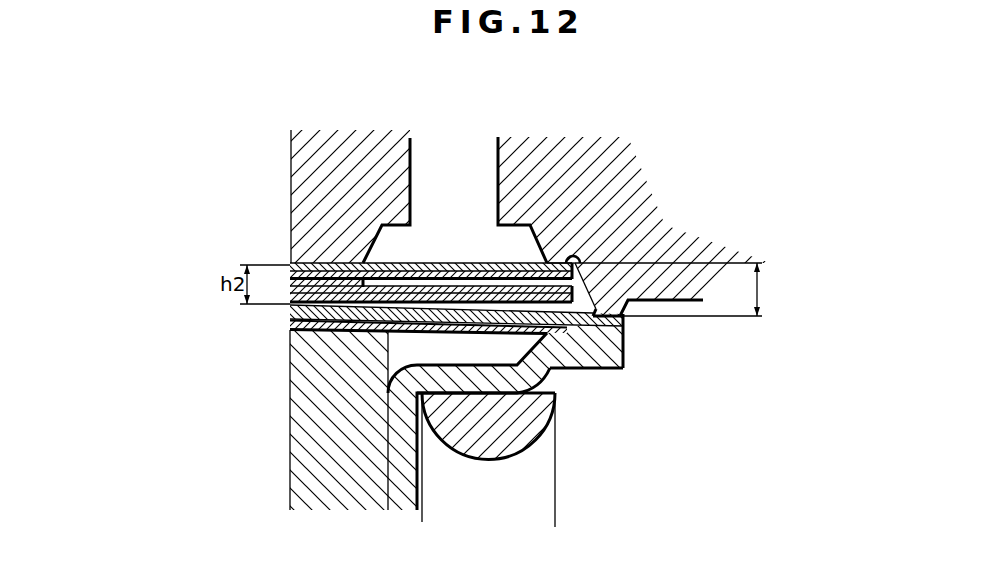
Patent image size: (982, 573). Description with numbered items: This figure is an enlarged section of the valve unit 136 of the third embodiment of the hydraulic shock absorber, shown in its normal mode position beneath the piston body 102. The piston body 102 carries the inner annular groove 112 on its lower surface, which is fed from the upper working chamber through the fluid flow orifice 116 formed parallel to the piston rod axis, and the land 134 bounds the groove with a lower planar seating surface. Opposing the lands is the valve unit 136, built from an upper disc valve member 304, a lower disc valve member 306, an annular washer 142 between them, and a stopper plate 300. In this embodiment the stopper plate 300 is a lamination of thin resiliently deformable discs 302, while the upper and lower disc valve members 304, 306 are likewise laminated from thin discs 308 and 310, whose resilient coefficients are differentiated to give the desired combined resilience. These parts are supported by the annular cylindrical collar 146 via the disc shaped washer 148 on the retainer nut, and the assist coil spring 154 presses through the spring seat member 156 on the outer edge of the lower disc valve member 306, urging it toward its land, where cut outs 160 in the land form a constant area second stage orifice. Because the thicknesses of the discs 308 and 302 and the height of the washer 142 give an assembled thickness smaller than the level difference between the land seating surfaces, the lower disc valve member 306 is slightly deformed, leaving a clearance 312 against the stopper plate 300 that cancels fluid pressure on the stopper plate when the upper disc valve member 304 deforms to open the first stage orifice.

The piston body 102 is at (307, 202).
The inner annular groove 112 is at (443, 250).
The fluid flow orifice 116 is at (488, 160).
The land 134 is at (547, 257).
The piston stroke speed dependent variable damping characteristics valve unit 136 is at (623, 312).
The annular washer 142 is at (381, 275).
The annular cylindrical collar 146 is at (290, 388).
The disc shaped washer 148 is at (290, 327).
The assist coil spring 154 is at (492, 462).
The spring seat member 156 is at (562, 362).
The cut out 160 is at (632, 320).
The stopper plate 300 is at (607, 262).
The thin resiliently deformable disc 302 is at (590, 266).
The upper disc valve member 304 is at (586, 262).
The lower disc valve member 306 is at (623, 322).
The thin resiliently deformable disc 308 is at (573, 256).
The thin resiliently deformable disc 310 is at (629, 336).
The clearance 312 is at (588, 315).